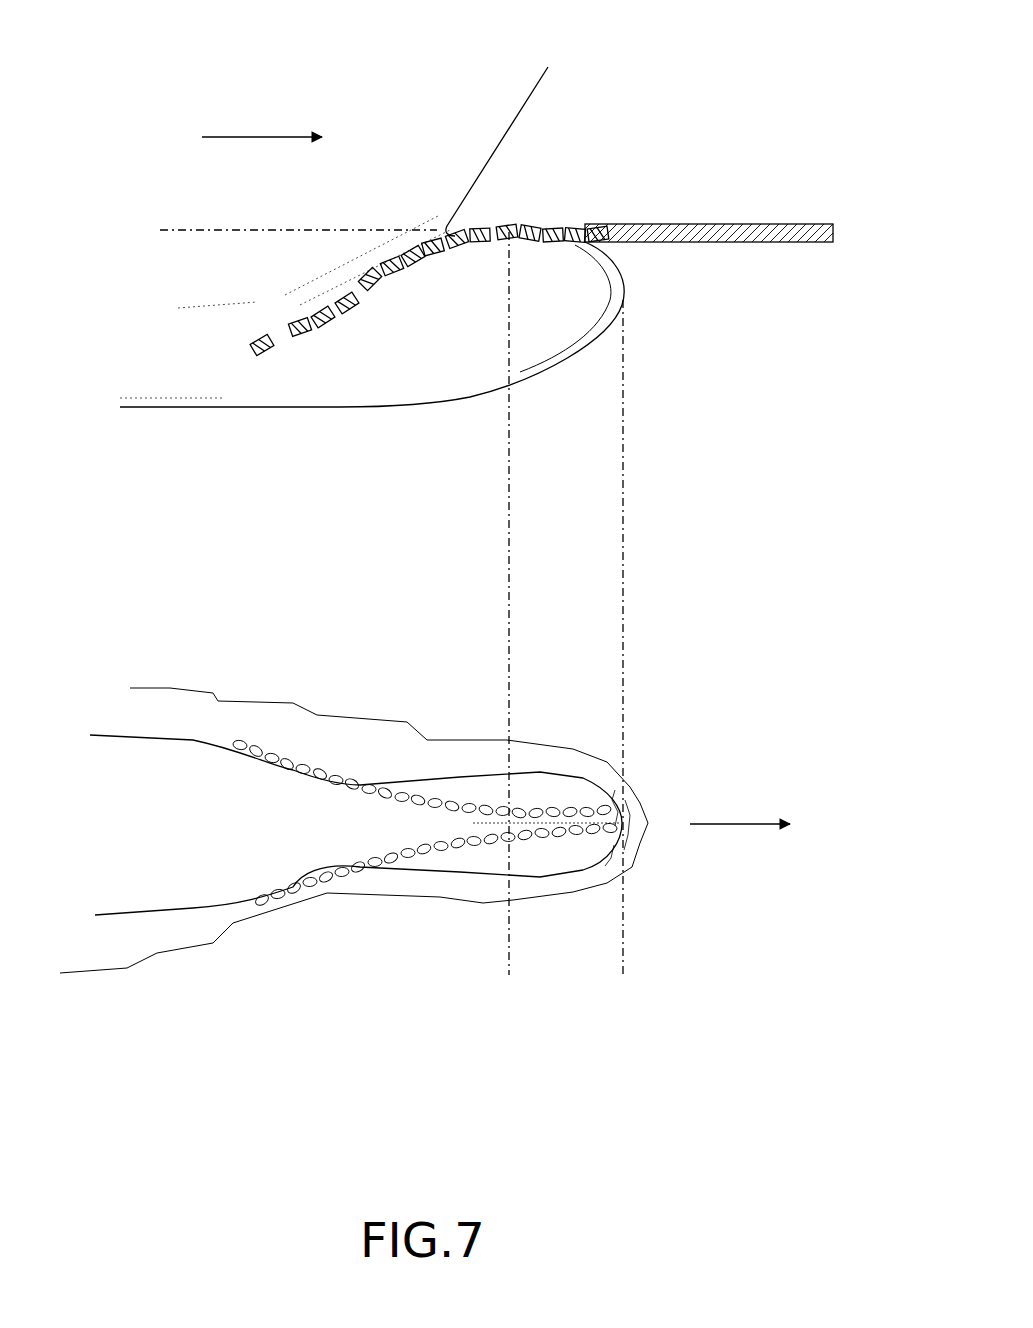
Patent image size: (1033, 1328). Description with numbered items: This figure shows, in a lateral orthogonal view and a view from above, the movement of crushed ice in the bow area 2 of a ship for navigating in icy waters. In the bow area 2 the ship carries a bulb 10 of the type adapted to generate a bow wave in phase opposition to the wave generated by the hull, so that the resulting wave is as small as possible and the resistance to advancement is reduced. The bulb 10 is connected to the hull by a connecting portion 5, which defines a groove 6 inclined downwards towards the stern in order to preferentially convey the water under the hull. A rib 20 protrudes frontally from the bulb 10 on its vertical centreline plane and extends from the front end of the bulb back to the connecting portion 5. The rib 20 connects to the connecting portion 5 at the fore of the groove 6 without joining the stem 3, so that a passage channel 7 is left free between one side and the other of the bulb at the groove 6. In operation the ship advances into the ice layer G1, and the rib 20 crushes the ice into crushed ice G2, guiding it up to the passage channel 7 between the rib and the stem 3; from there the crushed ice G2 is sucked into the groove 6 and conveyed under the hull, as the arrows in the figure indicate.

The bow area 2 is at (646, 353).
The stem 3 is at (535, 90).
The connecting portion 5 is at (348, 833).
The groove 6 is at (354, 258).
The passage channel 7 is at (488, 200).
The bulb 10 is at (498, 406).
The rib 20 is at (613, 253).
The ice layer G1 is at (740, 224).
The crushed ice G2 is at (352, 330).